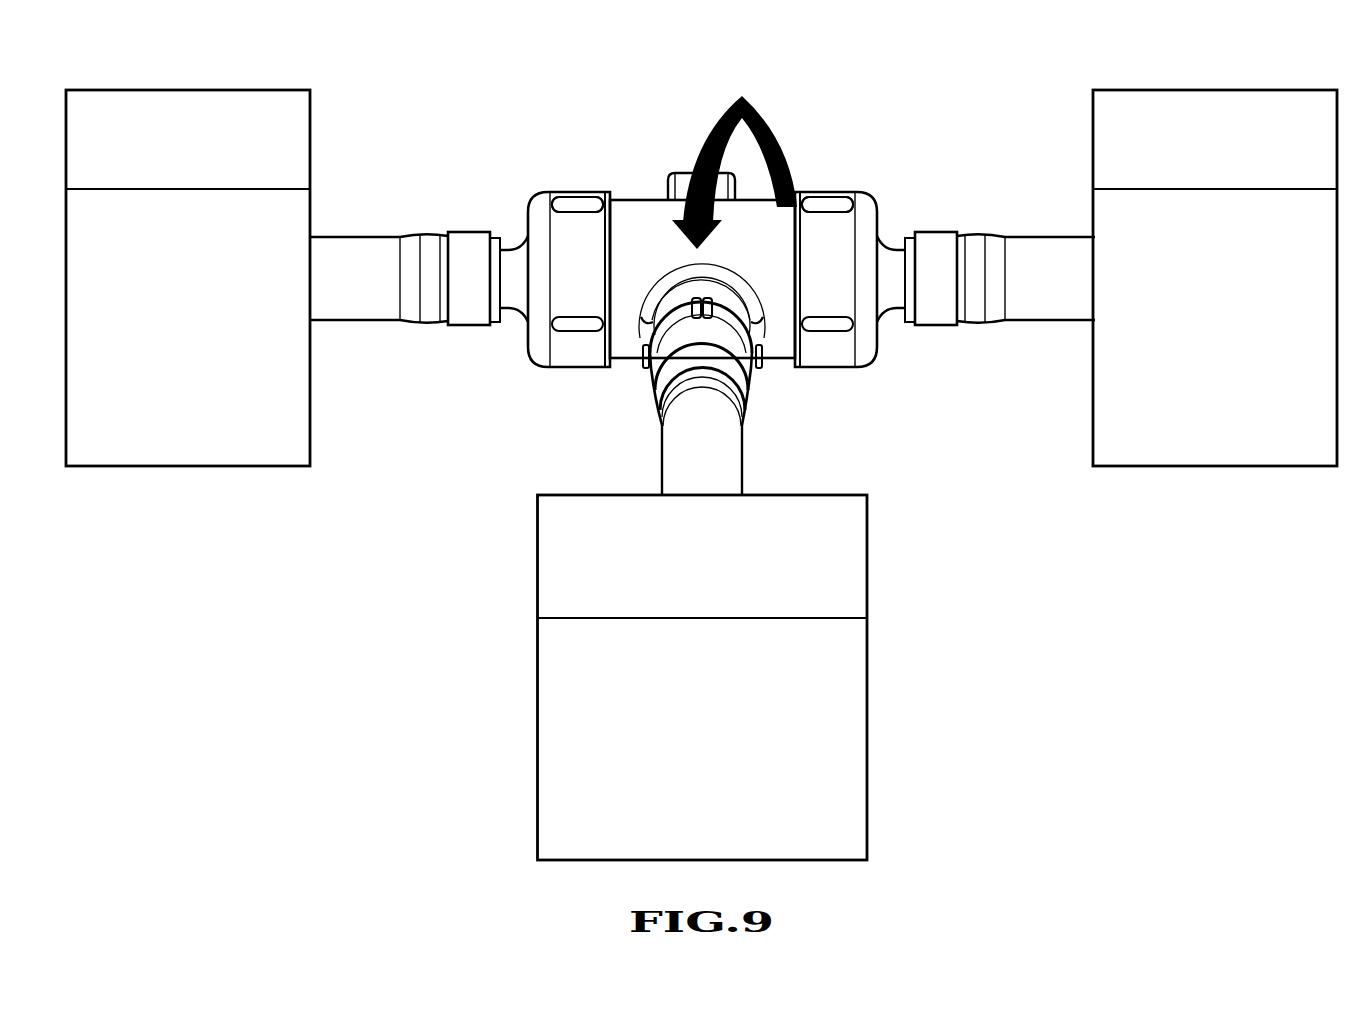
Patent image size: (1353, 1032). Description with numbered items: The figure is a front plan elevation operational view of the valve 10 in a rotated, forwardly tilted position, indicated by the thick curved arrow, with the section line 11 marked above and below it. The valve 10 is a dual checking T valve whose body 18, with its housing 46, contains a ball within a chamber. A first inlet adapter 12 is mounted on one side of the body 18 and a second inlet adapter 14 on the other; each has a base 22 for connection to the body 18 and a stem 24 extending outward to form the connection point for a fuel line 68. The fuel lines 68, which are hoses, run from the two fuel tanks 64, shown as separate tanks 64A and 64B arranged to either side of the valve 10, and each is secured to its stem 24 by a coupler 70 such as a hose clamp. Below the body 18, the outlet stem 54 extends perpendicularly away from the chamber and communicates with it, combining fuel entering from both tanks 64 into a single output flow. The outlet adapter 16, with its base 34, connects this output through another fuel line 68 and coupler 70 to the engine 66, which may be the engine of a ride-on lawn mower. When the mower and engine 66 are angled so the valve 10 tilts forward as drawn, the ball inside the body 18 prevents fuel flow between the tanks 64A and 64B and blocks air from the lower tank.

The valve 10 is at (728, 249).
The section line 11 is at (775, 97).
The first inlet adapter 12 is at (876, 189).
The second inlet adapter 14 is at (532, 189).
The outlet adapter 16 is at (793, 349).
The base 34 is at (738, 310).
The body 18 is at (671, 146).
The housing 46 is at (645, 193).
The base 22 is at (580, 192).
The stem 24 is at (516, 293).
The outlet stem 54 is at (695, 287).
The fuel tanks 64 is at (701, 333).
The fuel tank 64A is at (1211, 472).
The fuel tank 64B is at (185, 472).
The engine 66 is at (717, 816).
The fuel line 68 is at (358, 253).
The coupler 70 is at (472, 315).